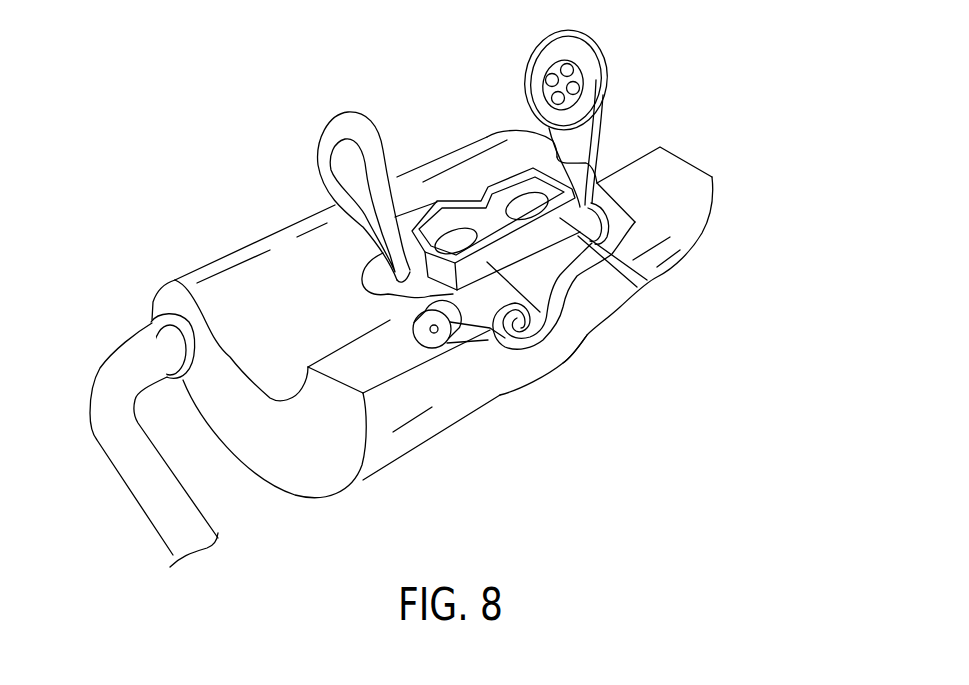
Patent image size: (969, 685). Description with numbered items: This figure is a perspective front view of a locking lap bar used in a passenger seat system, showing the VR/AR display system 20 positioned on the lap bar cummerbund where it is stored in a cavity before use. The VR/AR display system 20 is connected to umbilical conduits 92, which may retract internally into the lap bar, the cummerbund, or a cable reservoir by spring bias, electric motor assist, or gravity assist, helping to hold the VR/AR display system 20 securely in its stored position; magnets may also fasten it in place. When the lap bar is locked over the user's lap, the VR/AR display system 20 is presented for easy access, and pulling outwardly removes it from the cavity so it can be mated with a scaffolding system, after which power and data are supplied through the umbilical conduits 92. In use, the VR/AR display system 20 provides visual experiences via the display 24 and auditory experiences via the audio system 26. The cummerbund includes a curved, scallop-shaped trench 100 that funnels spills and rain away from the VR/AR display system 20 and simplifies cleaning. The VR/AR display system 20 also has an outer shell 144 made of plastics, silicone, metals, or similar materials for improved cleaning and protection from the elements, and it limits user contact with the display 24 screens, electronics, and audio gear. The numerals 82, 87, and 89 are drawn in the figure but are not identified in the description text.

The VR/AR display system 20 is at (593, 321).
The display 24 is at (500, 230).
The audio system 26 is at (340, 176).
The cable 82 is at (115, 347).
The hook latch 87 is at (557, 327).
The housing 89 is at (333, 455).
The umbilical conduits 92 is at (510, 338).
The trench 100 is at (324, 321).
The outer shell 144 is at (650, 279).